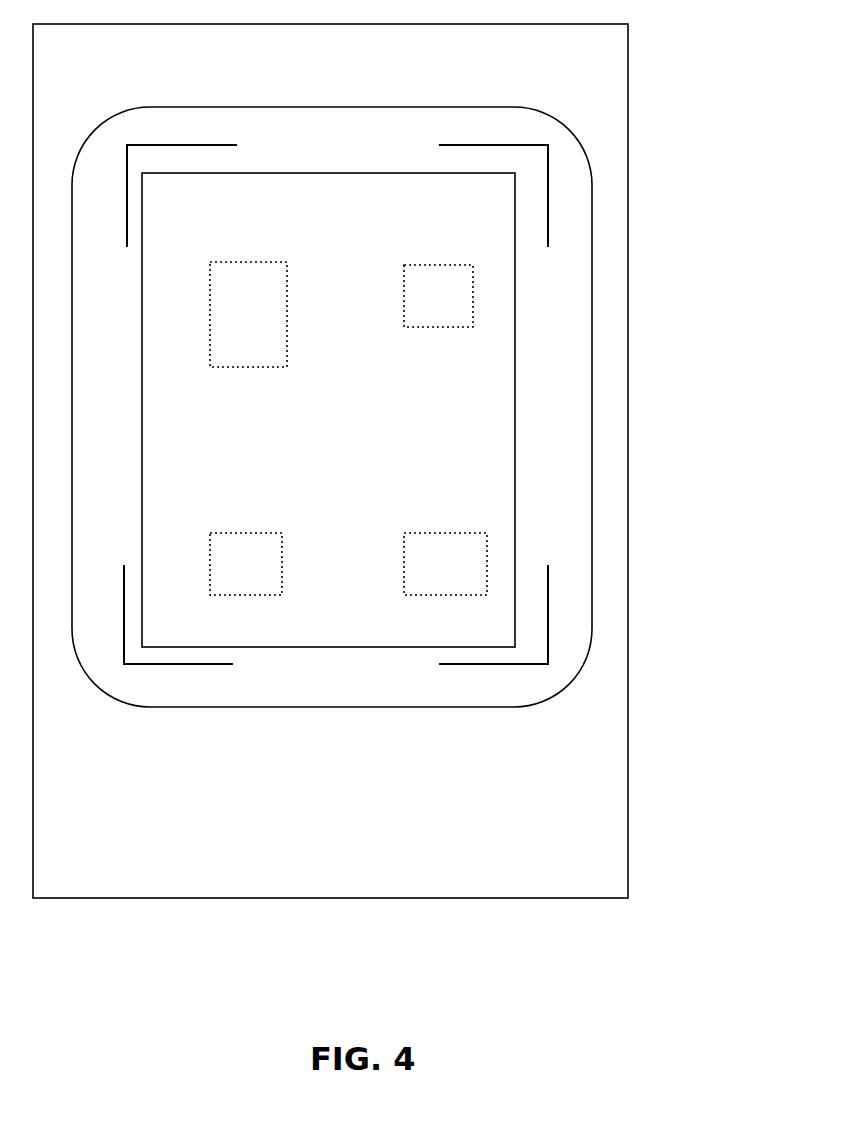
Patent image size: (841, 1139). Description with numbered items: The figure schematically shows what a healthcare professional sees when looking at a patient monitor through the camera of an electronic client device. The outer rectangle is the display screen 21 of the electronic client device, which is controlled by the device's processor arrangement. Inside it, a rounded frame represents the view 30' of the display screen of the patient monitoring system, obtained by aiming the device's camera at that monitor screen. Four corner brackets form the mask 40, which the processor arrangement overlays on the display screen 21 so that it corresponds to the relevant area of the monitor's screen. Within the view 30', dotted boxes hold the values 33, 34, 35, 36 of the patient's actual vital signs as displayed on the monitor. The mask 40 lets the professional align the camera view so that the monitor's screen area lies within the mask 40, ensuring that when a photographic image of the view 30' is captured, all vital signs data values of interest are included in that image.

The display screen 21 is at (598, 817).
The view 30' is at (396, 407).
The mask 40 is at (508, 148).
The value 33 is at (248, 262).
The value 34 is at (430, 264).
The value 35 is at (250, 533).
The value 36 is at (442, 533).